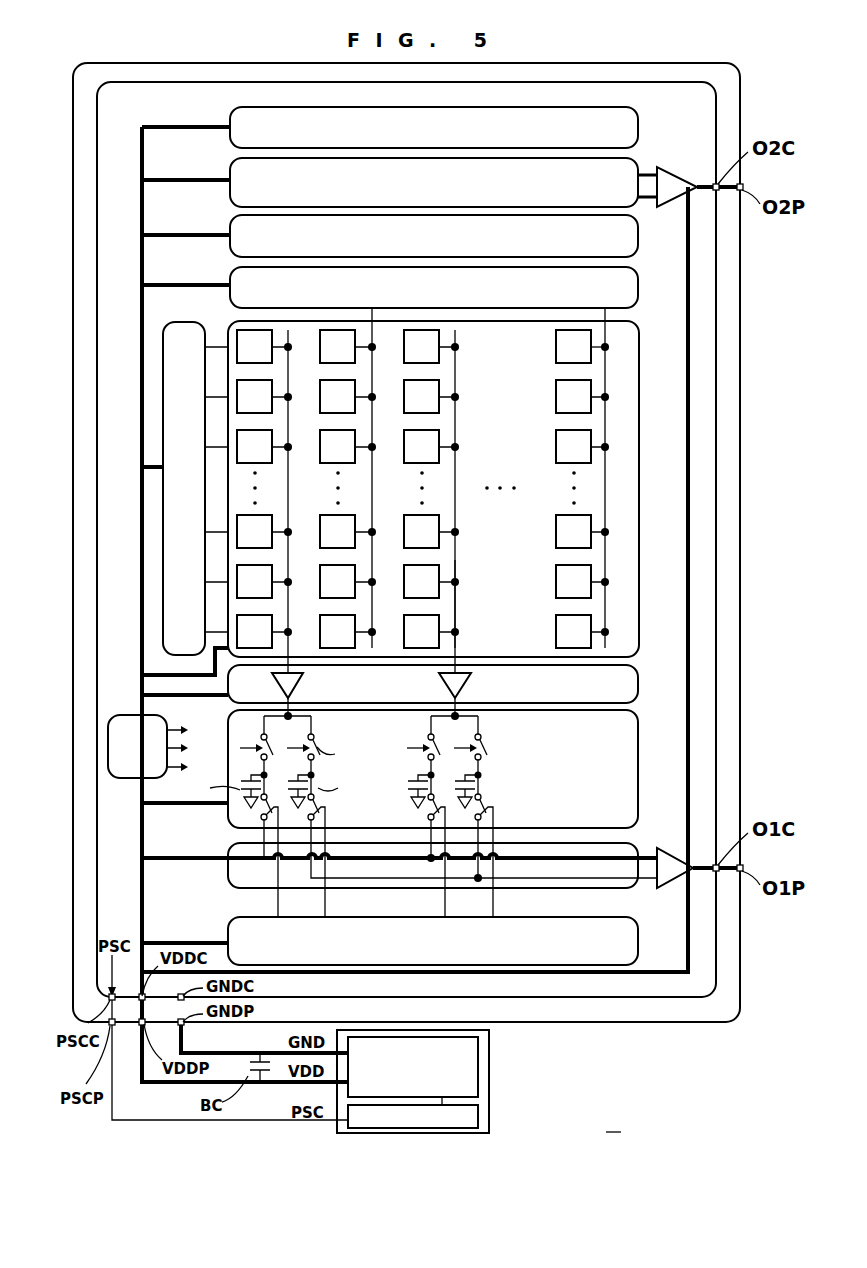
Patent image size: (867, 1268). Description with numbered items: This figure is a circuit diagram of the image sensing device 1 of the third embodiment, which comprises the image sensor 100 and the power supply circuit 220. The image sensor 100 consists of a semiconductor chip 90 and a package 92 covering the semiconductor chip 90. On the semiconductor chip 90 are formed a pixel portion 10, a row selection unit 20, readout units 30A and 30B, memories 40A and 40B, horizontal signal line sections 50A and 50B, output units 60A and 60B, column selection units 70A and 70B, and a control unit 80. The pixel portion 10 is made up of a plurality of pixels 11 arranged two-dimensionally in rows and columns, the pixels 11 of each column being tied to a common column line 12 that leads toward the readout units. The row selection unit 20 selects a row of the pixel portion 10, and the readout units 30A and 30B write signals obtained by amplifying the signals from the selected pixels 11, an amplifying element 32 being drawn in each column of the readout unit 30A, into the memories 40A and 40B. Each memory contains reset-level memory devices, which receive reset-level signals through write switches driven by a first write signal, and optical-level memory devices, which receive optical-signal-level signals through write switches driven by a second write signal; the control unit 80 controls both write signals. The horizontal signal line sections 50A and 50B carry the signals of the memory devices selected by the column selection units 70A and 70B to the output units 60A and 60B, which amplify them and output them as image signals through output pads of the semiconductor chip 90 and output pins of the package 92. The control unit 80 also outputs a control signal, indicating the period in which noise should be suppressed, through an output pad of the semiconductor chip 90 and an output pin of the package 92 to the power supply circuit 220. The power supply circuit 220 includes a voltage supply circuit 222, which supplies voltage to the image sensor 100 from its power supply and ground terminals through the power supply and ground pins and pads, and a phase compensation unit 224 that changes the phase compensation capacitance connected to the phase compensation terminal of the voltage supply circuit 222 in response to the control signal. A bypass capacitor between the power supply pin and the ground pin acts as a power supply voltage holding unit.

The image sensing device 1 is at (613, 1121).
The pixel portion 10 is at (454, 482).
The pixel 11 is at (556, 349).
The bit line 12 is at (458, 634).
The row selection unit 20 is at (186, 322).
The readout unit 30A is at (459, 682).
The readout unit 30B is at (638, 291).
The inverter 32 is at (306, 680).
The memory 40A is at (638, 762).
The memory 40B is at (638, 241).
The horizontal signal line section 50A is at (620, 890).
The horizontal signal line section 50B is at (638, 162).
The output unit 60A is at (667, 838).
The output unit 60B is at (693, 162).
The column selection unit 70A is at (640, 947).
The column selection unit 70B is at (638, 117).
The control unit 80 is at (127, 713).
The semiconductor chip 90 is at (641, 998).
The package 92 is at (700, 1023).
The image sensor 100 is at (581, 1022).
The power supply circuit 220 is at (446, 1081).
The voltage supply circuit 222 is at (478, 1080).
The phase compensation unit 224 is at (478, 1117).